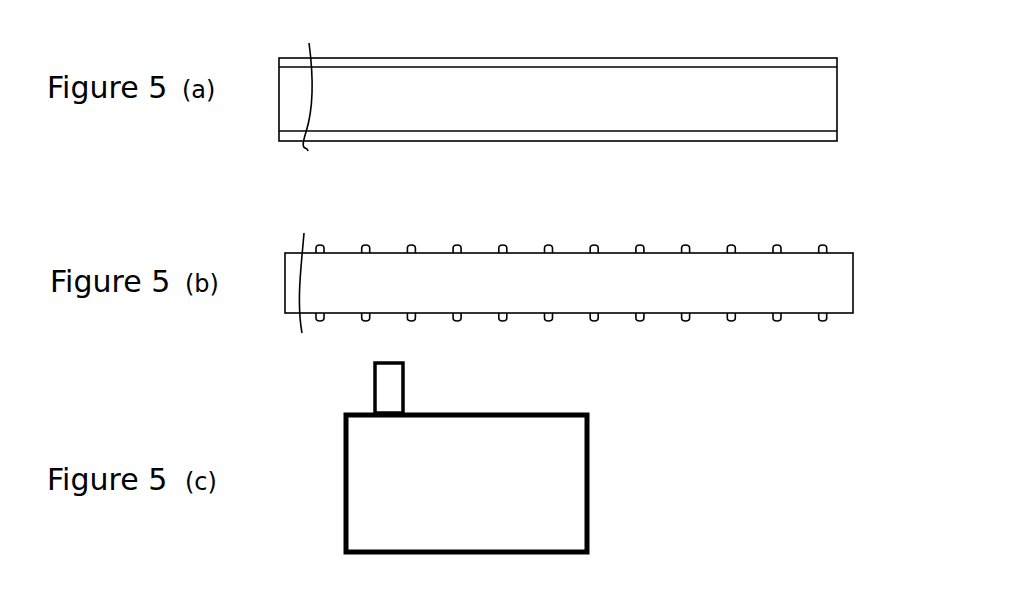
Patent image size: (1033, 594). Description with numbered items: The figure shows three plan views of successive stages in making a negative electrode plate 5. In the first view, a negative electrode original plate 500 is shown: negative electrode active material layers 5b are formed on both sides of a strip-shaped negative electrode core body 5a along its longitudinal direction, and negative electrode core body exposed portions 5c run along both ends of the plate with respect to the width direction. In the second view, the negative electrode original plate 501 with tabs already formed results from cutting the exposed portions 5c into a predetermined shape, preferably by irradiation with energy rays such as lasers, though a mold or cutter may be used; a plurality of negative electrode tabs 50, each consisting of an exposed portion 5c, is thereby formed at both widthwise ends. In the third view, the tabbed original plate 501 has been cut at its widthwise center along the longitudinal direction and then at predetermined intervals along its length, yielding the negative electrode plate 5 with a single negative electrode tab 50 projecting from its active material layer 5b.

In FIG. 5C, the negative electrode plate 5 is at (503, 451).
In FIG. 5A, the negative electrode core body 5a is at (614, 110).
In FIG. 5A, the negative electrode active material layer 5b is at (825, 100).
In FIG. 5B, the negative electrode active material layer 5b is at (827, 289).
In FIG. 5C, the negative electrode active material layer 5b is at (534, 507).
In FIG. 5A, the negative electrode core body exposed portion 5c is at (828, 64).
In FIG. 5B, the negative electrode tab 50 is at (826, 247).
In FIG. 5C, the negative electrode tab 50 is at (388, 380).
In FIG. 5A, the negative electrode original plate 500 is at (522, 146).
In FIG. 5B, the negative electrode original plate with tabs already formed 501 is at (391, 250).